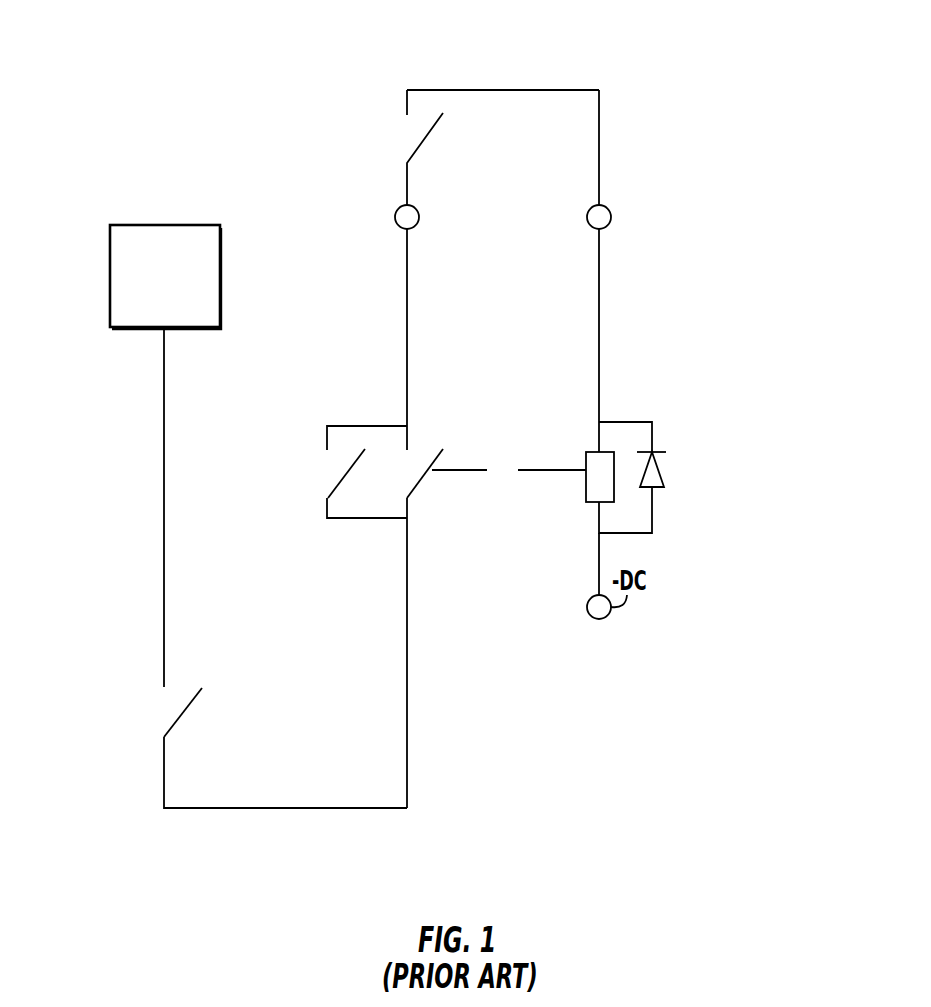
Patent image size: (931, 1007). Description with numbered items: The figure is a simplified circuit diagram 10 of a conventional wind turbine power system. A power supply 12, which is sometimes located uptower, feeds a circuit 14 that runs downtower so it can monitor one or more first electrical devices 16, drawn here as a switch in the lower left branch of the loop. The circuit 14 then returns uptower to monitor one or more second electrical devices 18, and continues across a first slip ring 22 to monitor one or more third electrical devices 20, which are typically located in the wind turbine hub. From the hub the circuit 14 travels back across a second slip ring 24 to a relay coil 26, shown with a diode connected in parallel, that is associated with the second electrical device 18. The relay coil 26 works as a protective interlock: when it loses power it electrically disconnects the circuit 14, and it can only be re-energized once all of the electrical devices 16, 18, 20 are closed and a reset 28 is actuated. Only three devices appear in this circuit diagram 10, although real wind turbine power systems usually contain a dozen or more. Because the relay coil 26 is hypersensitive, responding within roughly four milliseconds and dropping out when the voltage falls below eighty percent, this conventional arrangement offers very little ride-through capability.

The circuit diagram 10 is at (760, 133).
The power supply 12 is at (208, 225).
The circuit 14 is at (407, 322).
The first electrical device 16 is at (145, 726).
The second electrical device 18 is at (499, 452).
The third electrical device 20 is at (397, 115).
The first slip ring 22 is at (417, 205).
The second slip ring 24 is at (607, 205).
The relay coil 26 is at (677, 455).
The reset 28 is at (308, 494).